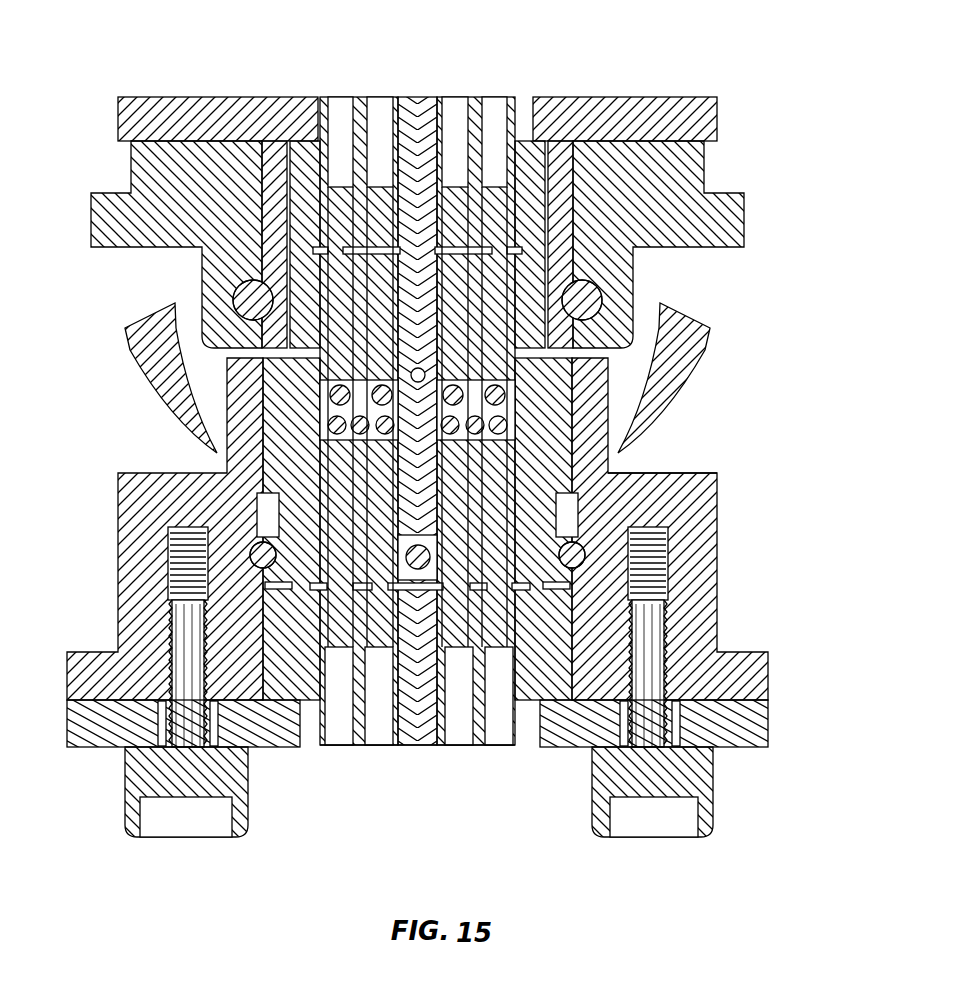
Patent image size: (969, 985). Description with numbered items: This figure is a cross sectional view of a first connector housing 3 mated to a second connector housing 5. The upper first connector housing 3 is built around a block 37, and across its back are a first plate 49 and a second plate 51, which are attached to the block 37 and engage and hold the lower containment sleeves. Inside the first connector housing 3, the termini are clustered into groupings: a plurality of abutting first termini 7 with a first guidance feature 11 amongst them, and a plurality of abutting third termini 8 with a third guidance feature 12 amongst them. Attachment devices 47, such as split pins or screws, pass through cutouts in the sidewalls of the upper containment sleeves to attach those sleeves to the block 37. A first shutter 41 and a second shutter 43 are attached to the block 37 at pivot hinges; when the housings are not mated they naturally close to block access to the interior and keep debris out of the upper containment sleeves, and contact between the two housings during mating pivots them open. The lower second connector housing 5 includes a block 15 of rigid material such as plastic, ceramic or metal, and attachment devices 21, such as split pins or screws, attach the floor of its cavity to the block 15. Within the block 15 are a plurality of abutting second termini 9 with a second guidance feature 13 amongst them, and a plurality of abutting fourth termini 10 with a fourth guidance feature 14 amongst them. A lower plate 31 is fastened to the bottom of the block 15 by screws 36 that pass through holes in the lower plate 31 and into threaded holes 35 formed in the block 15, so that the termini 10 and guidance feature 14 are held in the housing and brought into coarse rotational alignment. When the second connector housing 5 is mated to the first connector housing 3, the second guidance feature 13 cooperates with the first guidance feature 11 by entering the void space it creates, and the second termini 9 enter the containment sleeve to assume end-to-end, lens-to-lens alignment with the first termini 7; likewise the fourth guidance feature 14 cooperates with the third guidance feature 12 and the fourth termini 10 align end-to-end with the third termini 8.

The first connector housing 3 is at (822, 141).
The second connector housing 5 is at (768, 497).
The first termini 7 is at (378, 93).
The third termini 8 is at (493, 93).
The second termini 9 is at (382, 750).
The fourth termini 10 is at (457, 750).
The first guidance feature 11 is at (297, 150).
The third guidance feature 12 is at (530, 142).
The second guidance feature 13 is at (302, 690).
The fourth guidance feature 14 is at (545, 687).
The block 15 is at (707, 498).
The attachment devices 21 is at (643, 477).
The lower plate 31 is at (88, 713).
The threaded holes 35 is at (168, 567).
The screws 36 is at (123, 780).
The block 37 is at (113, 216).
The first shutter 41 is at (155, 378).
The second shutter 43 is at (692, 348).
The attachment devices 47 is at (600, 296).
The first plate 49 is at (132, 123).
The second plate 51 is at (714, 104).